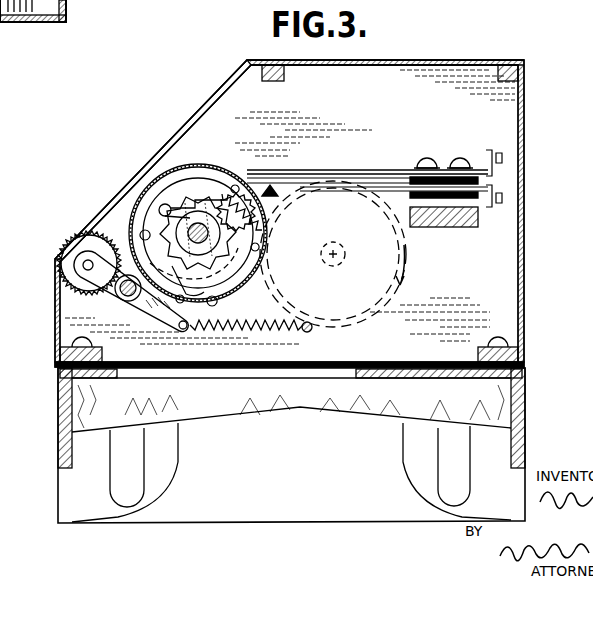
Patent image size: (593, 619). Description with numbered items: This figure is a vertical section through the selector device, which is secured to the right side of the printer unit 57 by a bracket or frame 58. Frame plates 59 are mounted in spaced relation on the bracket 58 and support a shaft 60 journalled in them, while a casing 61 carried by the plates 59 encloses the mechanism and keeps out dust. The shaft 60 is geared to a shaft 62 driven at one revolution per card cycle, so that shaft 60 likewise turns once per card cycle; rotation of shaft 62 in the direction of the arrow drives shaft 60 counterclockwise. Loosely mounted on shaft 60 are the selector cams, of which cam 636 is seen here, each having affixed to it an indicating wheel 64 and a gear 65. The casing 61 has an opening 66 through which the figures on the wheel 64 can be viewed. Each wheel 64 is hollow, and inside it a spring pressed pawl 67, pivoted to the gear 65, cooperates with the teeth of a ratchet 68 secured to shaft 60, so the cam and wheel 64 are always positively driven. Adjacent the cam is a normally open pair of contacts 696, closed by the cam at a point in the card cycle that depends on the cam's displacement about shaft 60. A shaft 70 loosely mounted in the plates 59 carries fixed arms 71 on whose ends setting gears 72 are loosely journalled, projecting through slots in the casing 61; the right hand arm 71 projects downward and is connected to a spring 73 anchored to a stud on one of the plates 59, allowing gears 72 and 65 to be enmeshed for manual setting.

The printer unit 57 is at (25, 22).
The bracket or frame 58 is at (325, 400).
The frame plate 59 is at (496, 268).
The shaft 60 is at (205, 235).
The casing 61 is at (348, 66).
The shaft 62 is at (345, 257).
The indicating wheel 64 is at (235, 288).
The gear 65 is at (195, 310).
The opening 66 is at (148, 172).
The spring pressed pawl 67 is at (200, 174).
The ratchet 68 is at (245, 249).
The shaft 70 is at (120, 295).
The arm 71 is at (80, 292).
The setting gear 72 is at (67, 243).
The spring 73 is at (100, 215).
The selector cam 636 is at (257, 278).
The pair of contacts 696 is at (270, 176).